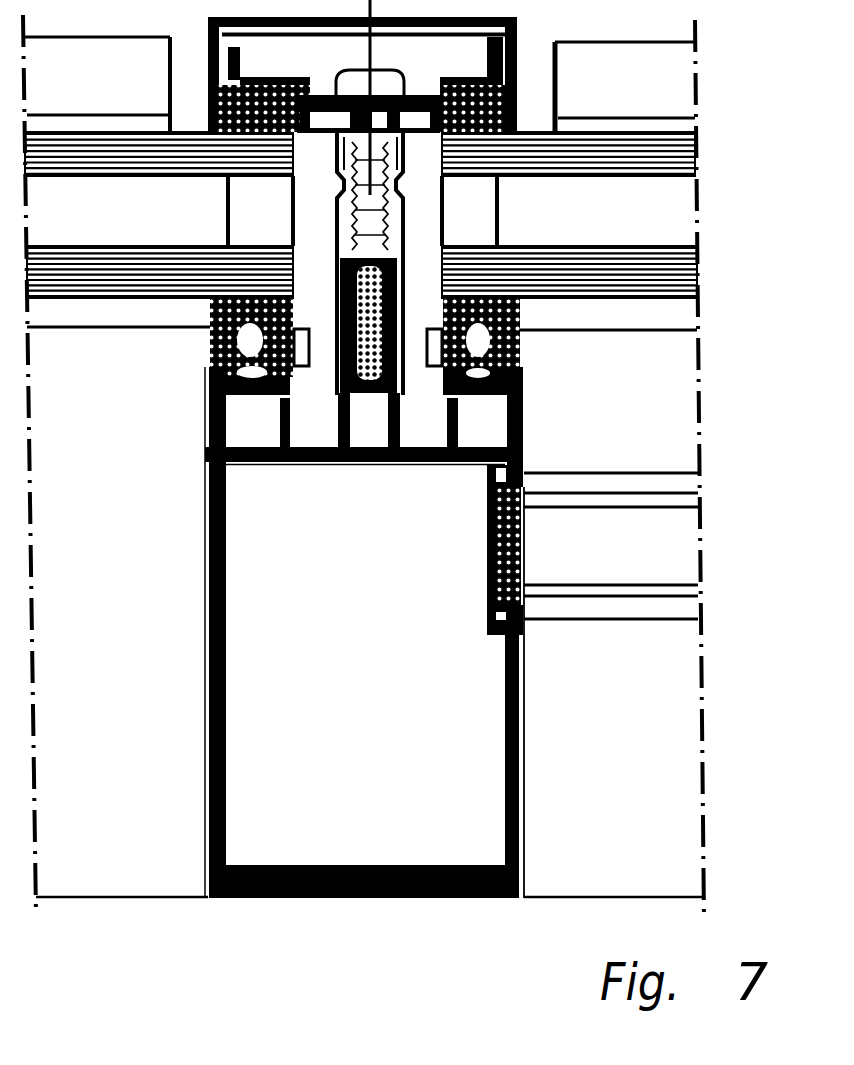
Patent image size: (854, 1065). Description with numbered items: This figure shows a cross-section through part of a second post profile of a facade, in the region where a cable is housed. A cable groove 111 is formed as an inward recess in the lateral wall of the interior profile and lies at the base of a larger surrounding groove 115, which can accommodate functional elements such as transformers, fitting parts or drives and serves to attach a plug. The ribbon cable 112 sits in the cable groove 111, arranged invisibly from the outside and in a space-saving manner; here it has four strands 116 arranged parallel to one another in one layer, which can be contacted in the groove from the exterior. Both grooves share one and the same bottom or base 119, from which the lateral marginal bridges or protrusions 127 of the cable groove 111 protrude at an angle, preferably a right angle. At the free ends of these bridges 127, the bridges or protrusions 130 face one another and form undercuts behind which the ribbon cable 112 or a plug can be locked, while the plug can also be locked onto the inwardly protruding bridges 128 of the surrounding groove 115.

The cable groove 111 is at (510, 486).
The ribbon cable 112 is at (525, 566).
The surrounding groove 115 is at (525, 607).
The strands 116 is at (525, 517).
The bottom or base 119 is at (507, 535).
The lateral marginal bridges or protrusions 127 is at (525, 475).
The inwardly protruding bridges 128 is at (512, 485).
The bridges or protrusions 130 is at (525, 580).